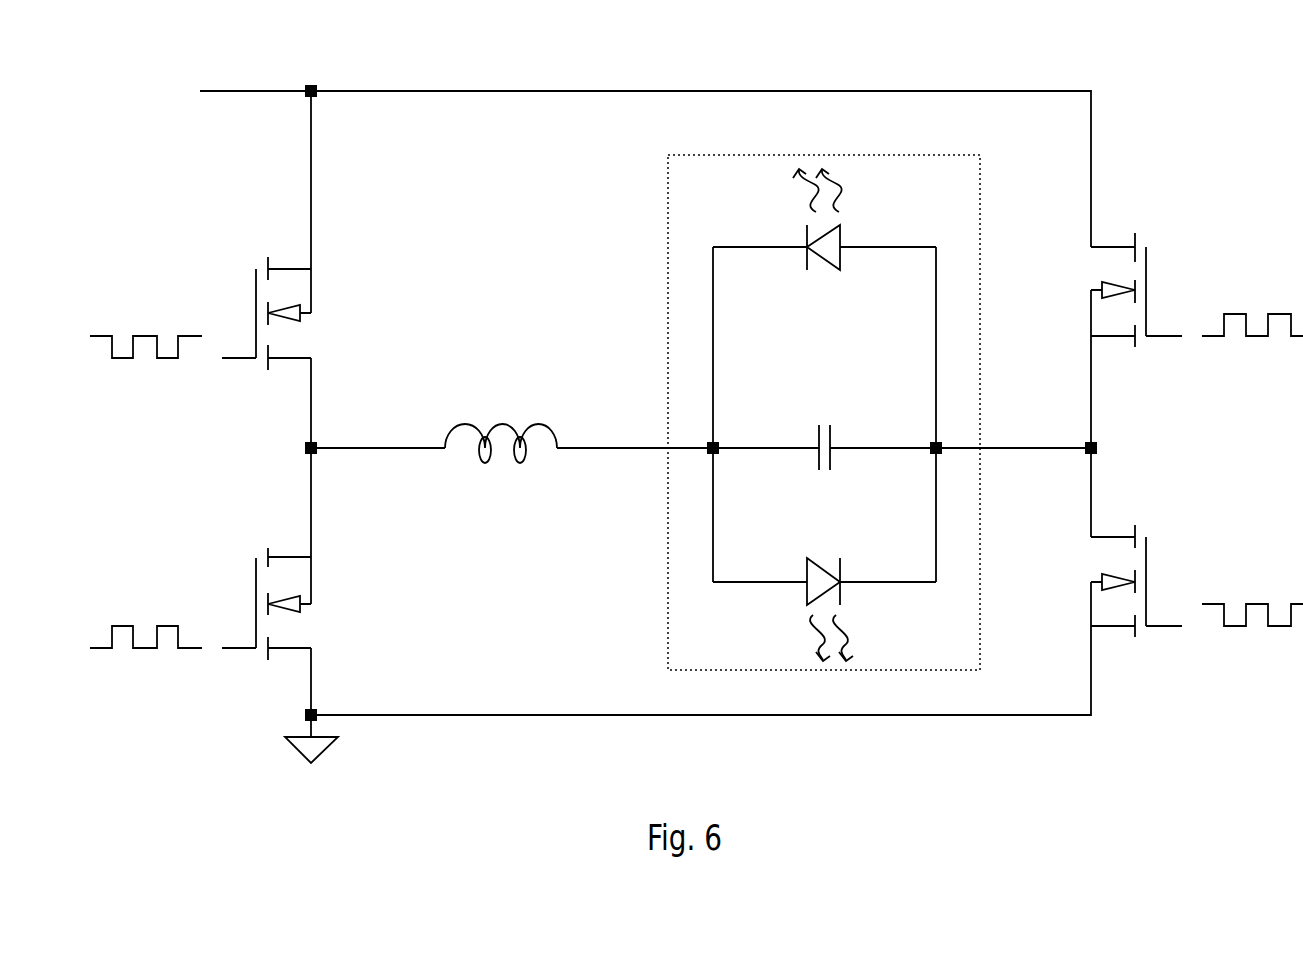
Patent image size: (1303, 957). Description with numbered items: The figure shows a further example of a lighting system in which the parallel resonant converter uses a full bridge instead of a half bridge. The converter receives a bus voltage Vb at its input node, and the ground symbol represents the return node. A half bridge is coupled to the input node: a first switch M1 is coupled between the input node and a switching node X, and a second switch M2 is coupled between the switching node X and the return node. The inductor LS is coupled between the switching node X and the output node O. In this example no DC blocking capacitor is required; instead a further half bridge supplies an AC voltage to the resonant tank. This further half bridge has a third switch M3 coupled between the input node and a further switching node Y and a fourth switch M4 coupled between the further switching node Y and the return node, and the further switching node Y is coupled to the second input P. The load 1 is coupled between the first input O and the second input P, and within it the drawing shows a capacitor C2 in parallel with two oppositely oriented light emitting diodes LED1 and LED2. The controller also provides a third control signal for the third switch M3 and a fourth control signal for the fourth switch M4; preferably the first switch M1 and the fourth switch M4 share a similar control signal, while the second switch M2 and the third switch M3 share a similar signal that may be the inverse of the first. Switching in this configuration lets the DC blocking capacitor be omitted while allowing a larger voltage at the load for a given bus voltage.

The load 1 is at (803, 408).
The bus voltage Vb is at (217, 91).
The first switch M1 is at (241, 313).
The second switch M2 is at (244, 604).
The third switch M3 is at (1154, 290).
The fourth switch M4 is at (1154, 581).
The inductor LS is at (501, 411).
The capacitor C2 is at (822, 414).
The first light emitting diode LED1 is at (824, 577).
The second light emitting diode LED2 is at (824, 253).
The switching node X is at (292, 448).
The output node O is at (672, 424).
The second input P is at (977, 424).
The further switching node Y is at (1111, 446).